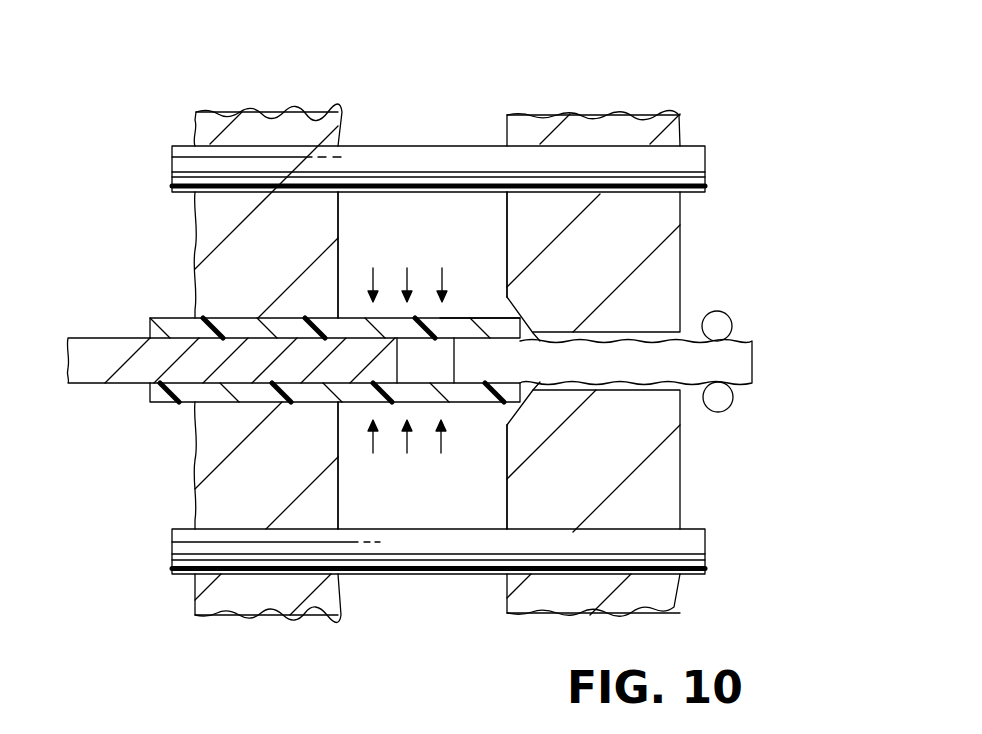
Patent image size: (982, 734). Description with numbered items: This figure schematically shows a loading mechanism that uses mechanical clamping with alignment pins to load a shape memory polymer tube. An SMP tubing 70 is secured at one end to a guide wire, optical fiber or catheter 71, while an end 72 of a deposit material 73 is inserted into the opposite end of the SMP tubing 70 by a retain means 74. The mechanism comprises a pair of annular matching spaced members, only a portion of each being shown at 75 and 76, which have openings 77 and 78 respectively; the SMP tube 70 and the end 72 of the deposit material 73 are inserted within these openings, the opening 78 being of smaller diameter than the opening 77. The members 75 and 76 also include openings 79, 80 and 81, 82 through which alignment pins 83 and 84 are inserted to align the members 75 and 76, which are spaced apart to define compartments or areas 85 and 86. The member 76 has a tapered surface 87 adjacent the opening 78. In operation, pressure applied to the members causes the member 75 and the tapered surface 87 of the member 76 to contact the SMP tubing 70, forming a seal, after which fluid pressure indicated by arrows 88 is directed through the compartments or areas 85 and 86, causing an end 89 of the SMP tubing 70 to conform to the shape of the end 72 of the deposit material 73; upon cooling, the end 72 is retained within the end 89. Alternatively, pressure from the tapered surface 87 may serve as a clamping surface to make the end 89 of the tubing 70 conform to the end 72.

The SMP tubing 70 is at (160, 317).
The guide wire, optical fiber or catheter 71 is at (137, 367).
The end of deposit material 72 is at (473, 363).
The deposit material 73 is at (752, 356).
The retain means 74 is at (733, 312).
The annular member 75 is at (296, 257).
The annular member 76 is at (620, 257).
The opening 77 is at (222, 404).
The opening 78 is at (681, 390).
The opening 79 is at (338, 146).
The opening 80 is at (338, 576).
The opening 81 is at (507, 146).
The opening 82 is at (505, 580).
The alignment pin 83 is at (705, 168).
The alignment pin 84 is at (705, 553).
The compartment or area 85 is at (492, 234).
The compartment or area 86 is at (488, 513).
The tapered surface 87 is at (525, 316).
The arrows 88 is at (358, 267).
The end of SMP tubing 89 is at (462, 317).